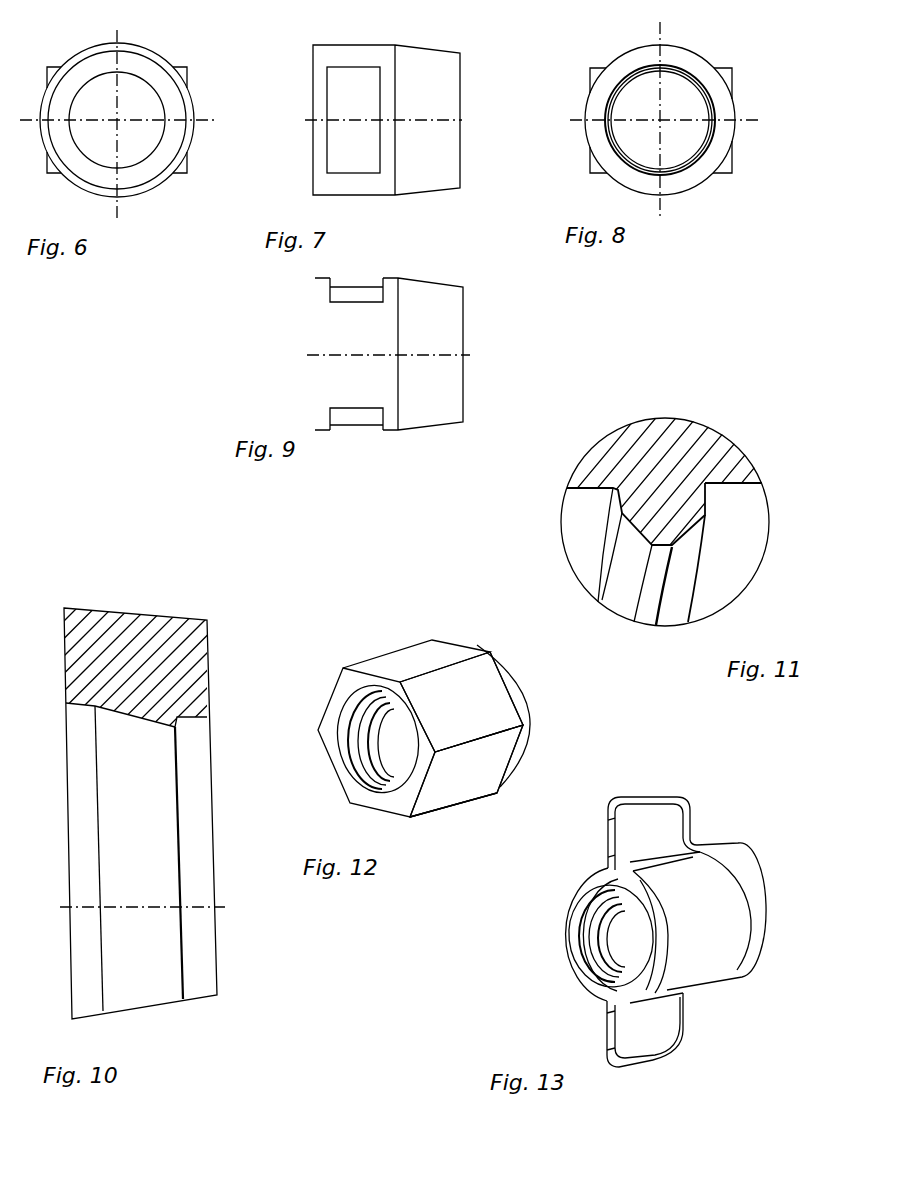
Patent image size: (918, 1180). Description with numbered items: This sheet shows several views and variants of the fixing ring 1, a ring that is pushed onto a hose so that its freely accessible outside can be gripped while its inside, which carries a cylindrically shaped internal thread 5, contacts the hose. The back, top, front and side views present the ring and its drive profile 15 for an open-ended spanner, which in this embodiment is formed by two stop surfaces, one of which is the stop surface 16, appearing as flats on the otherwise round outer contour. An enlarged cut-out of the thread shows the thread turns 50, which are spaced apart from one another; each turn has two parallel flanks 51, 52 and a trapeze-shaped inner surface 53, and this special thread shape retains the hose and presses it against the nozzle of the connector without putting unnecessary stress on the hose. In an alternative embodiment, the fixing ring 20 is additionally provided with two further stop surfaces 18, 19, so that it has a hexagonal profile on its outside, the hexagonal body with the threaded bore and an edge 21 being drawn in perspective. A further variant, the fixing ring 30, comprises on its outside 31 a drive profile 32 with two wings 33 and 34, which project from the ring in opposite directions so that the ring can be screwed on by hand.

In FIG. 7, the fixing ring 1 is at (486, 66).
In FIG. 11, the internal thread 5 is at (705, 421).
In FIG. 9, the drive profile 15 is at (361, 425).
In FIG. 9, the stop surface 16 is at (360, 285).
In FIG. 12, the further stop surface 18 is at (488, 698).
In FIG. 12, the further stop surface 19 is at (480, 777).
In FIG. 12, the fixing ring 20 is at (437, 636).
In FIG. 12, the nut edge 21 is at (458, 803).
In FIG. 13, the fixing ring 30 is at (708, 816).
In FIG. 13, the outside 31 is at (718, 960).
In FIG. 13, the drive profile 32 is at (695, 1037).
In FIG. 13, the wing 33 is at (653, 820).
In FIG. 13, the wing 34 is at (642, 1038).
In FIG. 11, the thread turns 50 is at (714, 513).
In FIG. 11, the flank 51 is at (740, 475).
In FIG. 11, the flank 52 is at (615, 511).
In FIG. 11, the inner surface 53 is at (690, 540).